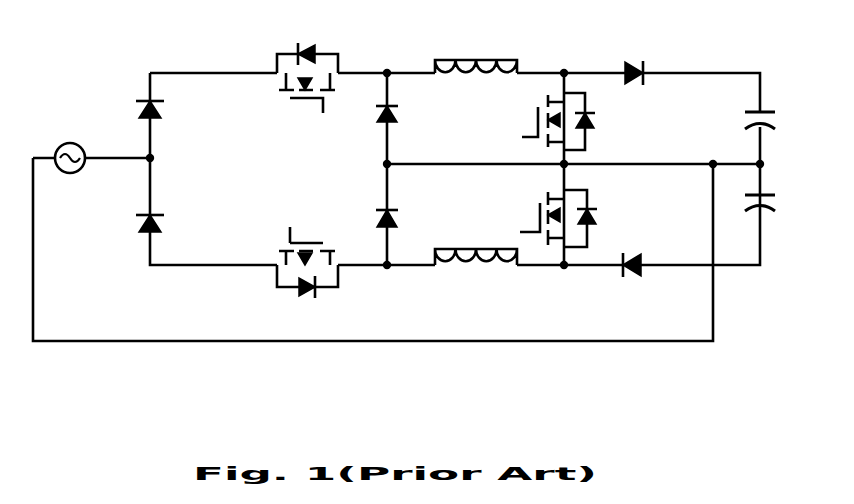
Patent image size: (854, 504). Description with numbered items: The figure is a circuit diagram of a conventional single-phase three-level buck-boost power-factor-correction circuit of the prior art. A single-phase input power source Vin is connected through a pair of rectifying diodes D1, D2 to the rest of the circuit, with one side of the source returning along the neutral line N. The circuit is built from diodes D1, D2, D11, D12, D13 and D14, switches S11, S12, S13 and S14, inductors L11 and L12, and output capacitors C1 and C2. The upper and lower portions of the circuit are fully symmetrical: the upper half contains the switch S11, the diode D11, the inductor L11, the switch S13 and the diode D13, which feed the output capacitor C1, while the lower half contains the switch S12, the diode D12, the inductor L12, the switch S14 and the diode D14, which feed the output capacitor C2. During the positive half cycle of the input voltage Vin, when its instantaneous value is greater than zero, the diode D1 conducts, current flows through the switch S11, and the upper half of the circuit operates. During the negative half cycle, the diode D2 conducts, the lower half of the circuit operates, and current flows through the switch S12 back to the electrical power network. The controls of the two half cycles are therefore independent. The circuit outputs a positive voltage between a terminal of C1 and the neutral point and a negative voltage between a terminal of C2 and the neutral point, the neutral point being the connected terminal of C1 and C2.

The input power source Vin is at (75, 145).
The neutral line N is at (59, 327).
The diode D1 is at (168, 112).
The diode D2 is at (167, 226).
The switch S11 is at (307, 91).
The switch S12 is at (307, 252).
The diode D11 is at (410, 116).
The diode D12 is at (409, 209).
The inductor L11 is at (476, 56).
The inductor L12 is at (476, 270).
The switch S13 is at (546, 121).
The switch S14 is at (546, 218).
The diode D13 is at (645, 85).
The diode D14 is at (644, 253).
The output capacitor C1 is at (749, 110).
The output capacitor C2 is at (749, 220).